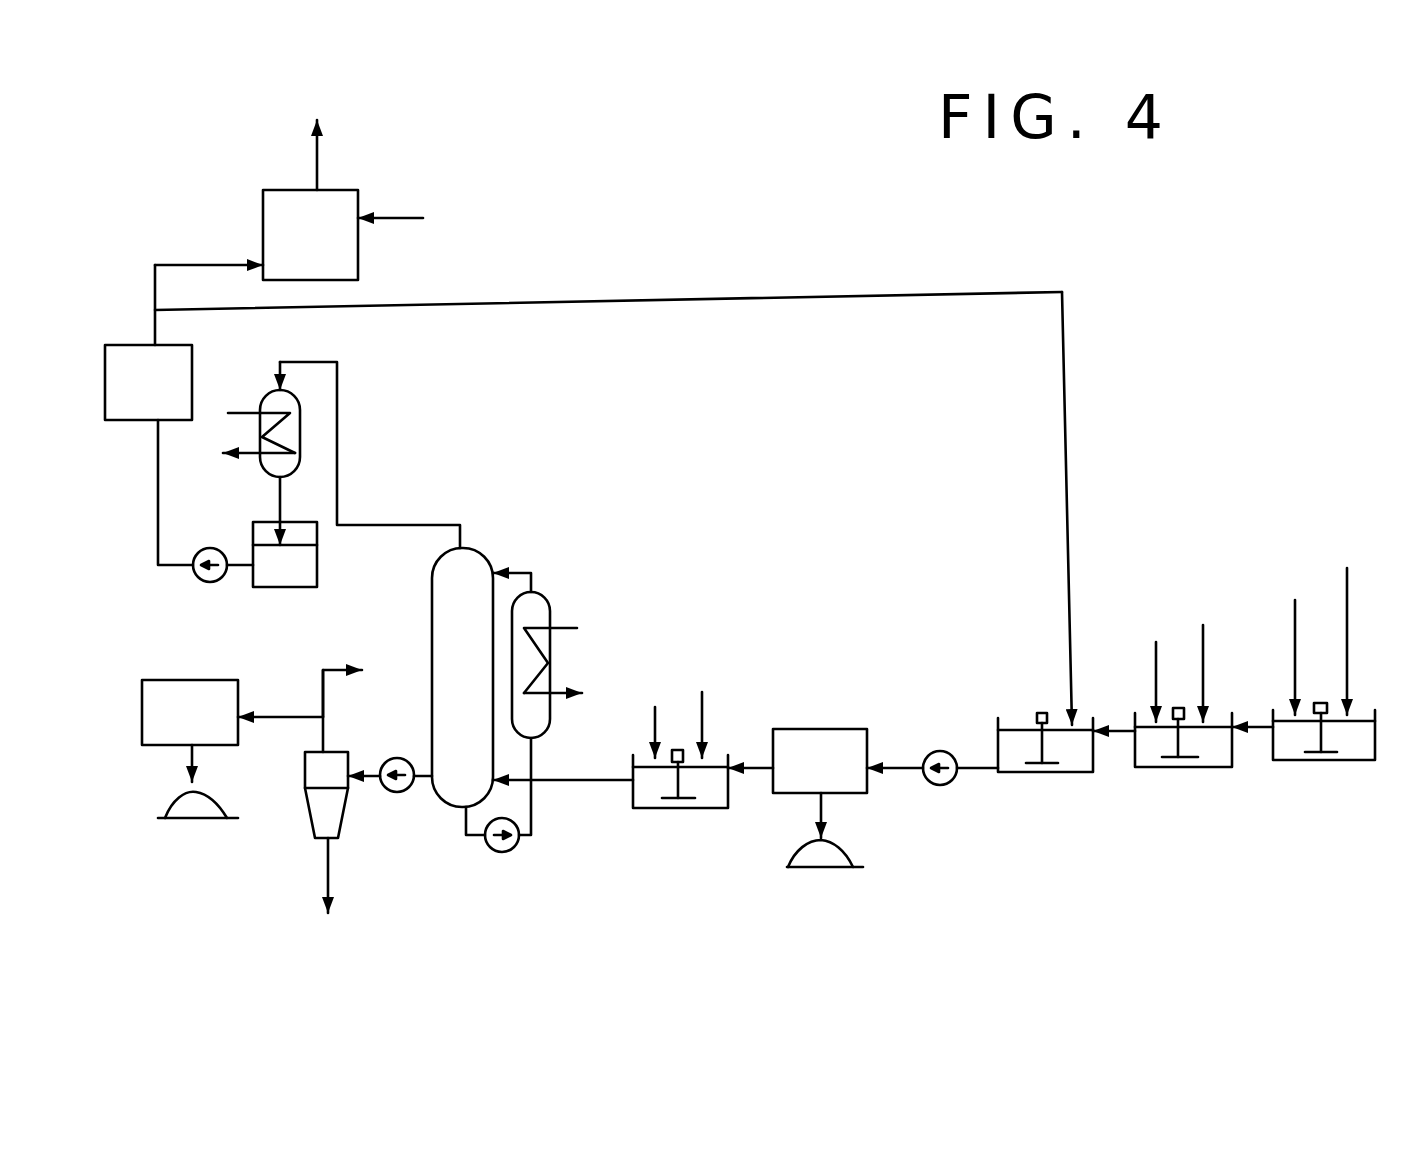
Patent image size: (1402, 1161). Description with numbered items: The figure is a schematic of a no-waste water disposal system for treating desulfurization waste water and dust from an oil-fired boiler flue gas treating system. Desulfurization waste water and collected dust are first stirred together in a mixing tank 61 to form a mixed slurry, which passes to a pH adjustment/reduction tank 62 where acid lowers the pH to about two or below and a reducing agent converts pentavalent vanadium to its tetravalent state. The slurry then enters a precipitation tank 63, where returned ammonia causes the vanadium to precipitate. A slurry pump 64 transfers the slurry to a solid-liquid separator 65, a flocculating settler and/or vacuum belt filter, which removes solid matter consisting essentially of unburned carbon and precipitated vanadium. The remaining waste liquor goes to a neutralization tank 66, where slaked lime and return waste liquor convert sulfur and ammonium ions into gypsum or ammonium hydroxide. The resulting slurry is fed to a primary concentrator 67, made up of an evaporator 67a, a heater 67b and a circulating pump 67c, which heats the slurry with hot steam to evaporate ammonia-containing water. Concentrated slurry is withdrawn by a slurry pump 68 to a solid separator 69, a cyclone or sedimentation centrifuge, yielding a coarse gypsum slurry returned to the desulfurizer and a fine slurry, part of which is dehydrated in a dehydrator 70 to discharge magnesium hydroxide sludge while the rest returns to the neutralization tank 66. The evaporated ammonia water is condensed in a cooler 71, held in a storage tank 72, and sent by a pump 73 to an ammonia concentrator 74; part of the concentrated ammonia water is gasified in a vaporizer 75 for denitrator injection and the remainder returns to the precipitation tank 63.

The mixing tank 61 is at (1320, 760).
The pH adjustment/reduction tank 62 is at (1185, 767).
The precipitation tank 63 is at (1020, 772).
The slurry pump 64 is at (945, 751).
The solid-liquid separator 65 is at (825, 729).
The neutralization tank 66 is at (661, 808).
The primary concentrator 67 is at (440, 840).
The evaporator 67a is at (432, 609).
The heater 67b is at (550, 601).
The circulating pump 67c is at (501, 852).
The slurry pump 68 is at (393, 793).
The solid separator 69 is at (305, 806).
The dehydrator 70 is at (165, 680).
The cooler 71 is at (300, 401).
The storage tank 72 is at (303, 522).
The pump 73 is at (206, 548).
The ammonia concentrator 74 is at (123, 420).
The vaporizer 75 is at (266, 190).